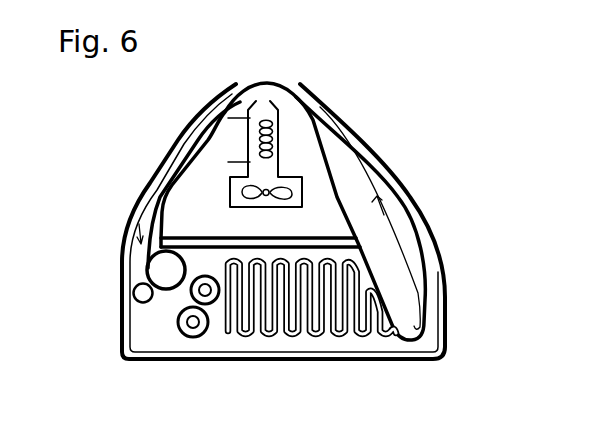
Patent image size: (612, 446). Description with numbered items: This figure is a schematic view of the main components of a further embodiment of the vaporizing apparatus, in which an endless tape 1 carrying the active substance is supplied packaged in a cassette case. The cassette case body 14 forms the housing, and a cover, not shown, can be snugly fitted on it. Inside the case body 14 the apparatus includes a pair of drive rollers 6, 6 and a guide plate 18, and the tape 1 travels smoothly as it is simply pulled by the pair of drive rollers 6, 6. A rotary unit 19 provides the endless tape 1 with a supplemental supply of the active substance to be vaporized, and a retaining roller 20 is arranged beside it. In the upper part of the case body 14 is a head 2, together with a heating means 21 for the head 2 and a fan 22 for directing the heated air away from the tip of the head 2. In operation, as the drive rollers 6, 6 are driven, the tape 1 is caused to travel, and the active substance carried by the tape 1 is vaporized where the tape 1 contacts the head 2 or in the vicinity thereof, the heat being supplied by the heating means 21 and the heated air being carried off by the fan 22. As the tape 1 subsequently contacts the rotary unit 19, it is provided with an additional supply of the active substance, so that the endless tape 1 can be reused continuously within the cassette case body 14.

The endless tape 1 is at (303, 333).
The head 2 is at (275, 104).
The drive rollers 6 is at (190, 333).
The cassette case body 14 is at (423, 223).
The guide plate 18 is at (393, 302).
The rotary unit 19 is at (153, 273).
The retaining roller 20 is at (140, 297).
The heating means 21 is at (272, 140).
The fan 22 is at (301, 194).